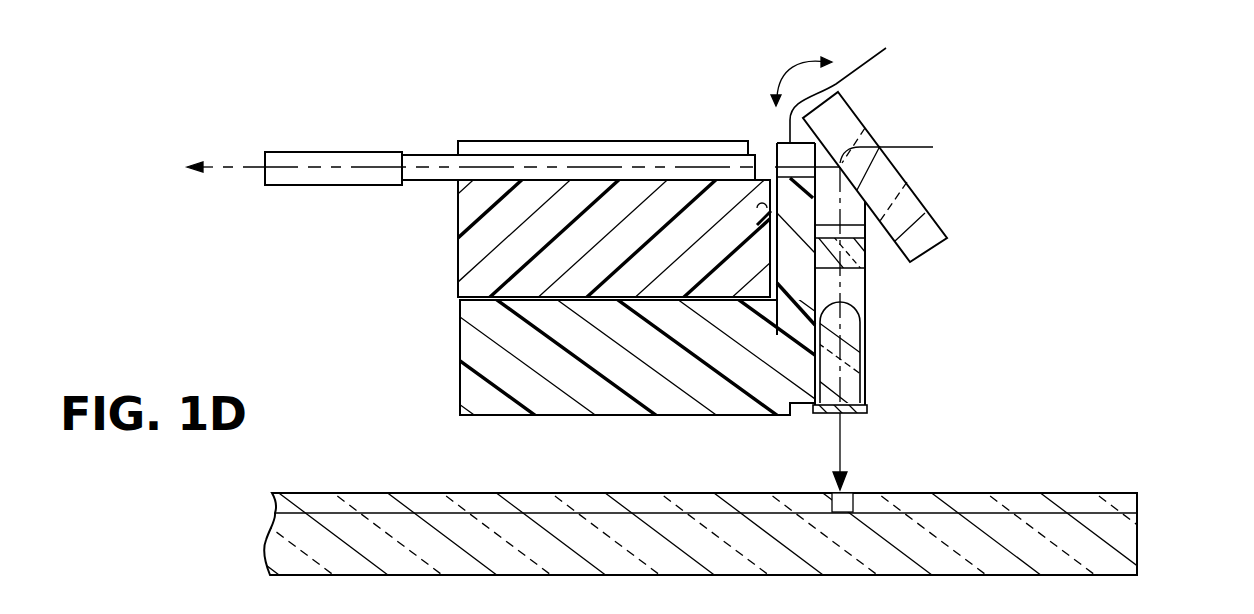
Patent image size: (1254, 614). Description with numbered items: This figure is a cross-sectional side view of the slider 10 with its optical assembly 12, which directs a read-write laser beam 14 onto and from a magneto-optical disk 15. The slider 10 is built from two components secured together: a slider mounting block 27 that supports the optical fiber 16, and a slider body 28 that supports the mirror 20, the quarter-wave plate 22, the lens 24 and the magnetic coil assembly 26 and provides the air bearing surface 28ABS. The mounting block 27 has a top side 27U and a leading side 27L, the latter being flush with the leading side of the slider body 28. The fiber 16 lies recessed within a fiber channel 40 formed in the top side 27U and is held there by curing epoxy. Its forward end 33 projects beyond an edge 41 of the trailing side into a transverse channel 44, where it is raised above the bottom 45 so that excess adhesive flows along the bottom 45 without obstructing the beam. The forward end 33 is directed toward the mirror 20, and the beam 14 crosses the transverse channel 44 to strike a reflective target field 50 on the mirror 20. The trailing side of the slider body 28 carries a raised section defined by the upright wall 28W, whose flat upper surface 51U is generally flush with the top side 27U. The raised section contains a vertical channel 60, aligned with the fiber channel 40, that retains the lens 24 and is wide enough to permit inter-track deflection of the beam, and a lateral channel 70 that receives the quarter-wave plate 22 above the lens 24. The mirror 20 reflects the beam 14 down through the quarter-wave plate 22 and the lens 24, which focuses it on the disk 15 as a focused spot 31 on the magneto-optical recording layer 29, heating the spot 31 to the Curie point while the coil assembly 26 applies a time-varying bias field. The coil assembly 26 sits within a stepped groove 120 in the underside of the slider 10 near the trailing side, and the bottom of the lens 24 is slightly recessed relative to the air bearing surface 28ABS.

The slider 10 is at (340, 297).
The optical assembly 12 is at (884, 86).
The laser beam 14 is at (223, 166).
The disk 15 is at (1125, 544).
The optical fiber 16 is at (326, 156).
The mirror 20 is at (870, 119).
The quarter-wave plate 22 is at (858, 262).
The lens 24 is at (856, 396).
The magnetic coil assembly 26 is at (857, 416).
The slider mounting block 27 is at (486, 132).
The top side of slider mounting block 27U is at (615, 140).
The leading side of slider mounting block 27L is at (458, 243).
The slider body 28 is at (445, 370).
The air bearing surface 28ABS is at (557, 417).
The upright wall 28W is at (772, 180).
The magneto-optical recording layer 29 is at (1063, 510).
The target spot 31 is at (846, 498).
The forward end of optical fiber 33 is at (757, 162).
The fiber channel 40 is at (512, 168).
The edge of trailing side 41 is at (757, 152).
The transverse channel 44 is at (760, 214).
The bottom of transverse channel 45 is at (757, 210).
The reflective target field 50 is at (876, 266).
The flat upper surface of raised section 51U is at (862, 79).
The vertical channel 60 is at (858, 298).
The lateral channel 70 is at (863, 232).
The stepped groove 120 is at (800, 416).